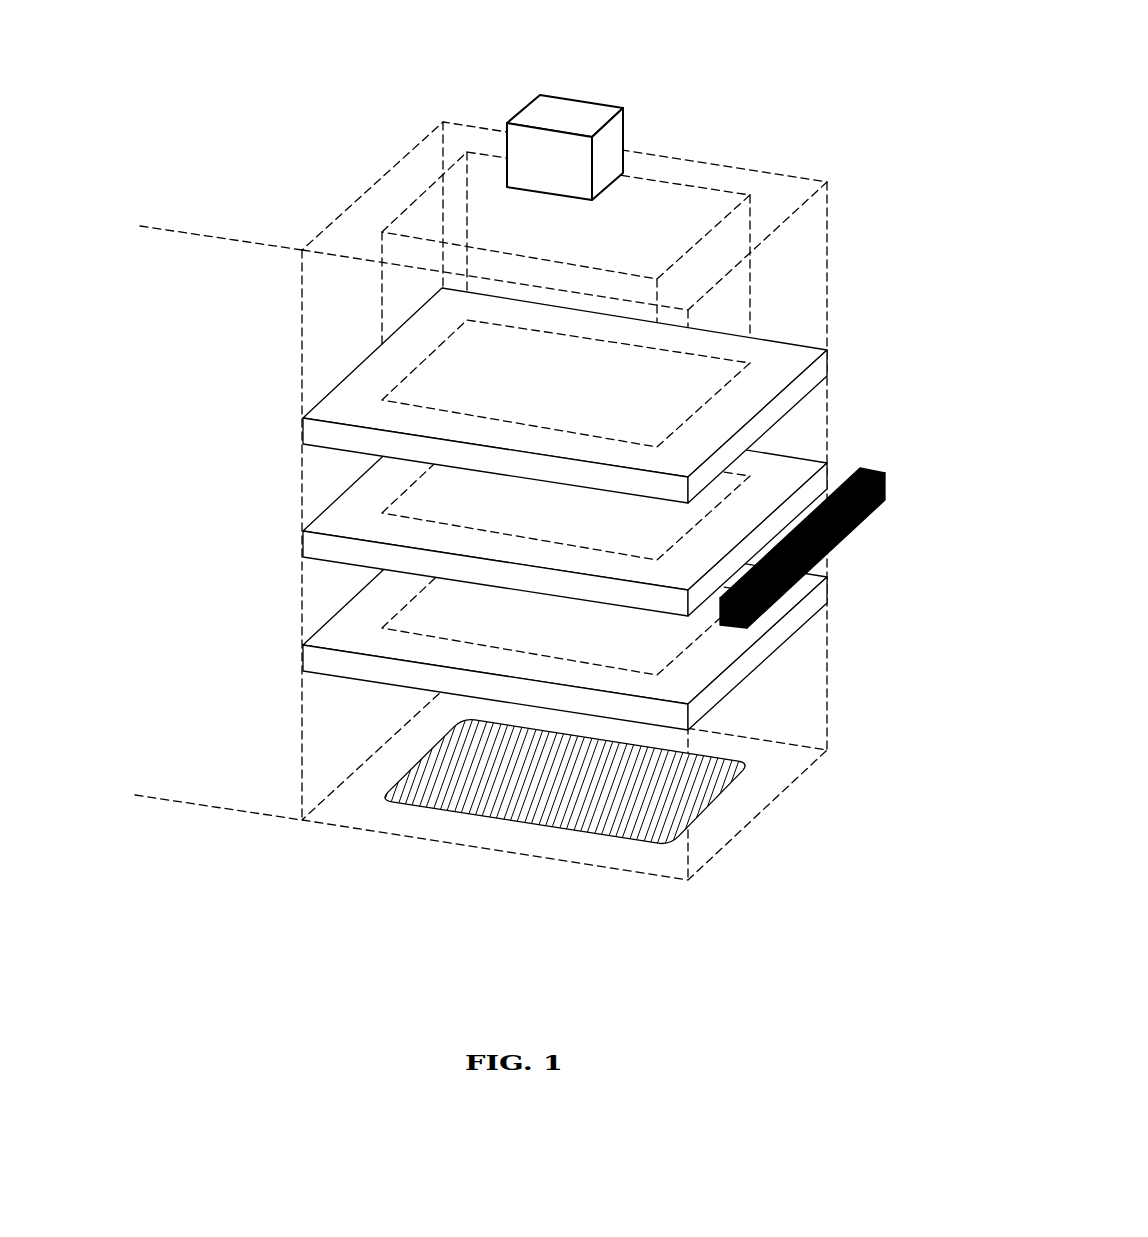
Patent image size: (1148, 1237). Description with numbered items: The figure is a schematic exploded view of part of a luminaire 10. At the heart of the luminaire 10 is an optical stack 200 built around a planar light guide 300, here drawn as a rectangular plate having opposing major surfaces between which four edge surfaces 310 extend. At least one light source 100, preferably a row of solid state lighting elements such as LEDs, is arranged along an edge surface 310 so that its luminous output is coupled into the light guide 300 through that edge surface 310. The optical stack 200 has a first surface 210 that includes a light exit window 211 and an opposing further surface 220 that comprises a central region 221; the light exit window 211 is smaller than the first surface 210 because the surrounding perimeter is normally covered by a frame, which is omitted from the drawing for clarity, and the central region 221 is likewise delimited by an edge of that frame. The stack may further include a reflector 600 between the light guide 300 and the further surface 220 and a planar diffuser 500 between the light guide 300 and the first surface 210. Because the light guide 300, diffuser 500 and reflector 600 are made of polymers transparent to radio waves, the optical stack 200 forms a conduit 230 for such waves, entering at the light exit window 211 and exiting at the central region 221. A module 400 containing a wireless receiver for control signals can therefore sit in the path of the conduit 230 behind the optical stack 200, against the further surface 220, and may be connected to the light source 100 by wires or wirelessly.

The luminaire 10 is at (562, 955).
The light source 100 is at (828, 538).
The optical stack 200 is at (140, 226).
The first surface 210 is at (792, 758).
The light exit window 211 is at (577, 794).
The further surface 220 is at (785, 197).
The central region 221 is at (700, 212).
The conduit 230 is at (728, 317).
The planar light guide 300 is at (328, 522).
The edge surface 310 is at (817, 487).
The module 400 is at (563, 117).
The planar diffuser 500 is at (328, 640).
The reflector 600 is at (328, 410).